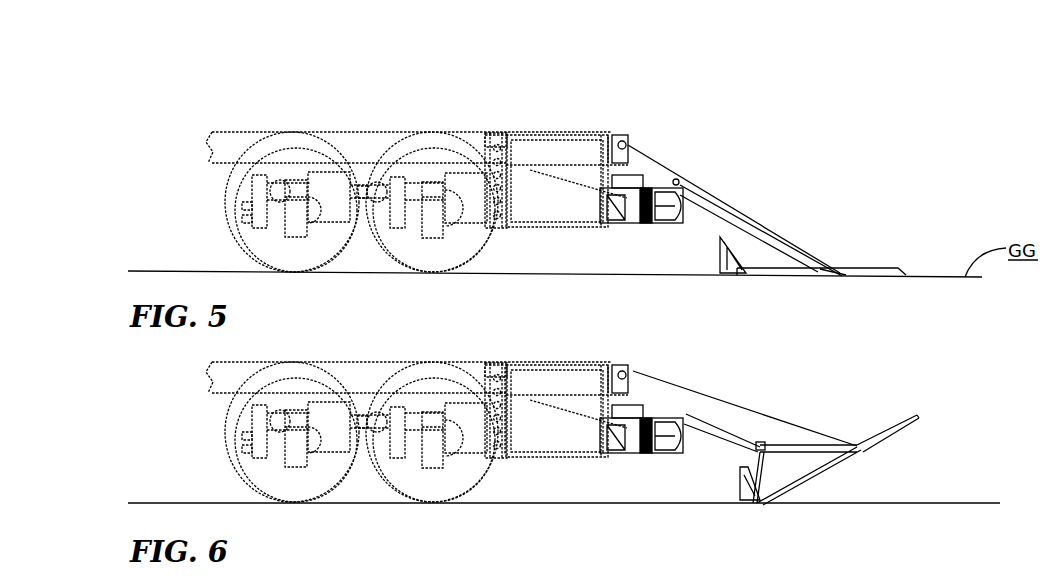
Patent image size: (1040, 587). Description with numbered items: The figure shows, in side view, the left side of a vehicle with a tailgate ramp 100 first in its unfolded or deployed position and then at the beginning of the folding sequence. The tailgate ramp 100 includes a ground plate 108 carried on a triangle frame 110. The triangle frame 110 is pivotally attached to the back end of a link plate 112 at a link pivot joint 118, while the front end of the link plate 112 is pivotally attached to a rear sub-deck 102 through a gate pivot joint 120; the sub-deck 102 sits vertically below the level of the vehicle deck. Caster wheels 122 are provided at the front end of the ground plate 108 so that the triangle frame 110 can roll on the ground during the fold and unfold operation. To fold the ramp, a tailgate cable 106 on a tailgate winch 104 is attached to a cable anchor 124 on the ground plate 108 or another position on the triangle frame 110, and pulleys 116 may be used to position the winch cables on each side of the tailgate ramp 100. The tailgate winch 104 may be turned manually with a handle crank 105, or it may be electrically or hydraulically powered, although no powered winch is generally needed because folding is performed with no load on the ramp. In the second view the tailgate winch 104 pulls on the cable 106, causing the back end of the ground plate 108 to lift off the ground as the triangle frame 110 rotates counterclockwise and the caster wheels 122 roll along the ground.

In FIG. 5, the tailgate ramp 100 is at (787, 209).
In FIG. 5, the rear sub-deck 102 is at (627, 224).
In FIG. 6, the rear sub-deck 102 is at (567, 411).
In FIG. 5, the tailgate winch 104 is at (492, 133).
In FIG. 6, the tailgate winch 104 is at (480, 385).
In FIG. 6, the handle crank 105 is at (535, 384).
In FIG. 5, the tailgate cable 106 is at (650, 157).
In FIG. 6, the tailgate cable 106 is at (745, 395).
In FIG. 5, the ground plate 108 is at (805, 272).
In FIG. 6, the ground plate 108 is at (822, 473).
In FIG. 5, the triangle frame 110 is at (742, 262).
In FIG. 5, the link plate 112 is at (702, 207).
In FIG. 6, the link plate 112 is at (641, 429).
In FIG. 5, the pulleys 116 is at (622, 135).
In FIG. 6, the pulleys 116 is at (618, 379).
In FIG. 5, the link pivot joint 118 is at (750, 226).
In FIG. 6, the link pivot joint 118 is at (722, 433).
In FIG. 5, the gate pivot joint 120 is at (677, 180).
In FIG. 6, the caster wheels 122 is at (738, 513).
In FIG. 5, the cable anchor 124 is at (842, 272).
In FIG. 6, the cable anchor 124 is at (886, 410).